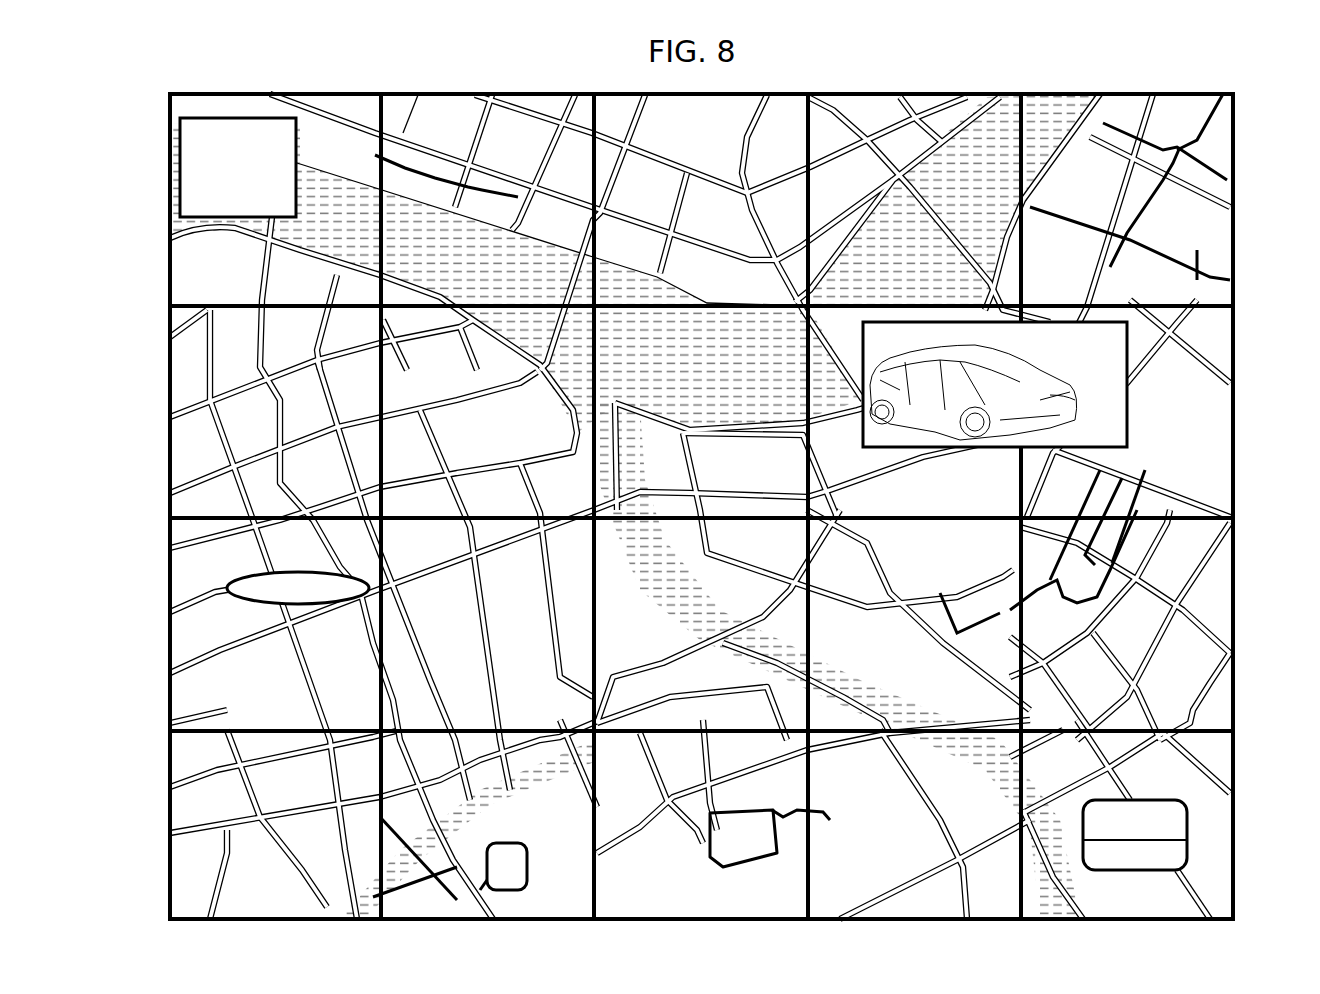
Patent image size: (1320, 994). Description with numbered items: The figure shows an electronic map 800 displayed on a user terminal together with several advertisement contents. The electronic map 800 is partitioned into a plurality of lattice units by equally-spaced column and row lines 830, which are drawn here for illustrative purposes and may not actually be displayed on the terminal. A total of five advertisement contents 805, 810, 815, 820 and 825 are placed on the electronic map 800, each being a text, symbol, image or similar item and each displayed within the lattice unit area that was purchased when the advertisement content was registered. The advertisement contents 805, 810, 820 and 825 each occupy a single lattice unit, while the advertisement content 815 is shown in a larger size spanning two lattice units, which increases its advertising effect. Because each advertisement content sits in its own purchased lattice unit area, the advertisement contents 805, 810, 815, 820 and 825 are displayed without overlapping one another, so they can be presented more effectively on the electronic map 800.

The electronic map 800 is at (1312, 234).
The advertisement content 805 is at (223, 118).
The advertisement content 810 is at (227, 590).
The advertisement content 815 is at (1130, 400).
The advertisement content 820 is at (747, 470).
The advertisement content 825 is at (1187, 830).
The column and row lines 830 is at (168, 475).